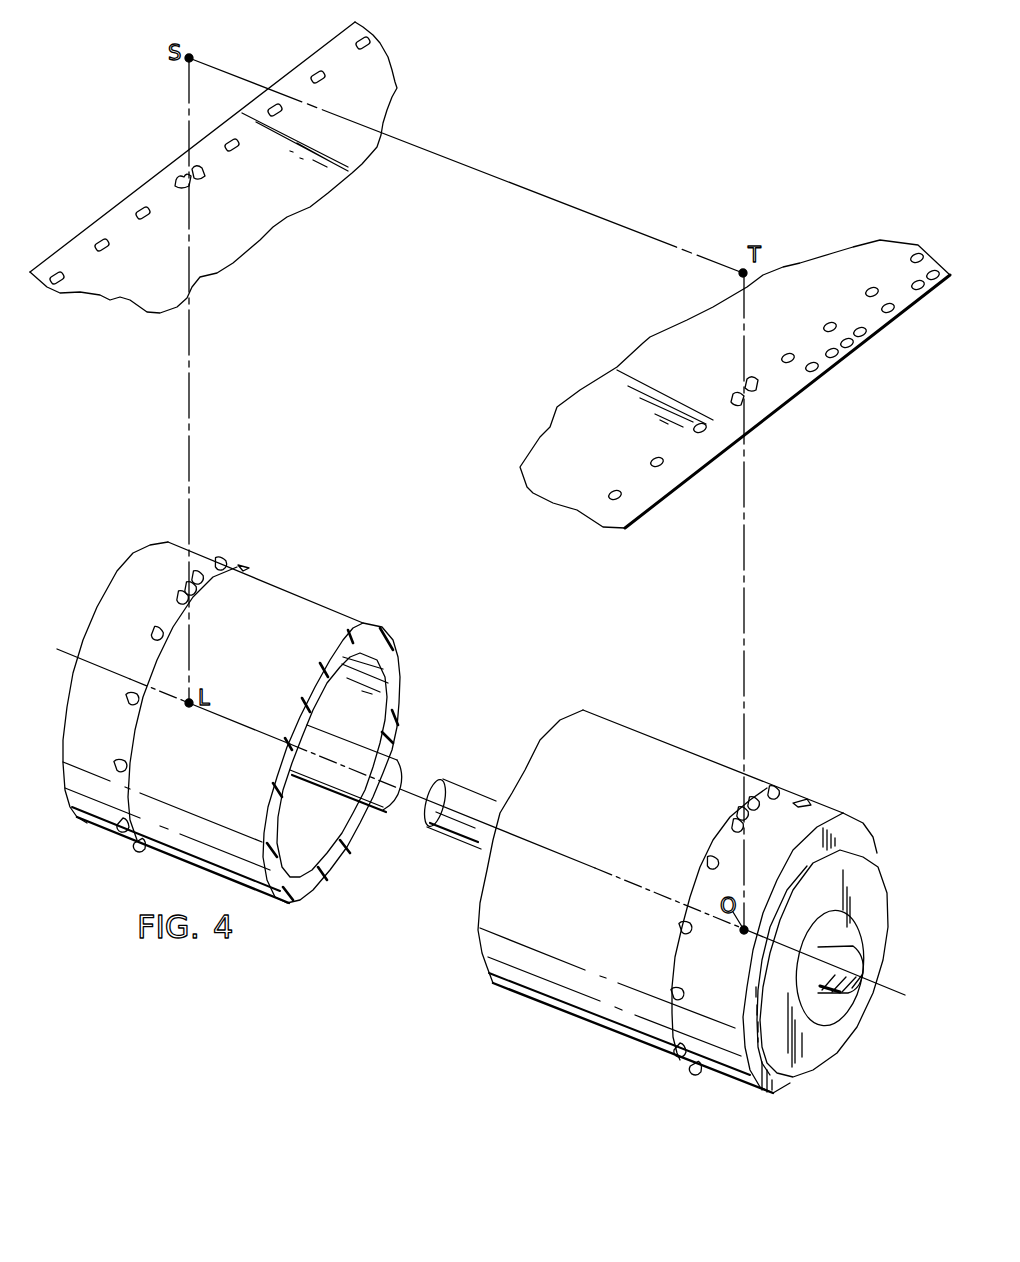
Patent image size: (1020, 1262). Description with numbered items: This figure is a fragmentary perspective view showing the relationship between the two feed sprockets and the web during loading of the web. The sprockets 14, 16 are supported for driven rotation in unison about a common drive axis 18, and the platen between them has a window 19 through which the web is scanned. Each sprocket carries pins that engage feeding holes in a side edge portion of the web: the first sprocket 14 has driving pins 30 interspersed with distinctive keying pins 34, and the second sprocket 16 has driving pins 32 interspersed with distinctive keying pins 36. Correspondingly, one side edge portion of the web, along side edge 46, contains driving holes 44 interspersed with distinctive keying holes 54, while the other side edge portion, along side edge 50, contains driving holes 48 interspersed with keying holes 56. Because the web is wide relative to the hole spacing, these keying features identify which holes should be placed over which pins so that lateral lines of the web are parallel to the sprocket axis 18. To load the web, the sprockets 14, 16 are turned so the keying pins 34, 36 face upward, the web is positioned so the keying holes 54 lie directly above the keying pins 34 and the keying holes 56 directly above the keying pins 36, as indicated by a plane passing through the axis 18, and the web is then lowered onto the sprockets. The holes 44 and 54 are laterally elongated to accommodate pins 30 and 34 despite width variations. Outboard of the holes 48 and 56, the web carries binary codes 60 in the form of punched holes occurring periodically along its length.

The sprocket 14 is at (90, 832).
The sprocket 16 is at (720, 1082).
The drive axis 18 is at (882, 977).
The window 19 is at (803, 797).
The driving pins 30 is at (140, 708).
The driving pins 32 is at (710, 957).
The keying pins 34 is at (190, 602).
The keying pins 36 is at (750, 807).
The driving holes 44 is at (143, 220).
The side edge 46 is at (142, 182).
The driving holes 48 is at (613, 490).
The side edge 50 is at (697, 477).
The keying holes 54 is at (190, 187).
The keying holes 56 is at (735, 397).
The binary codes 60 is at (862, 357).